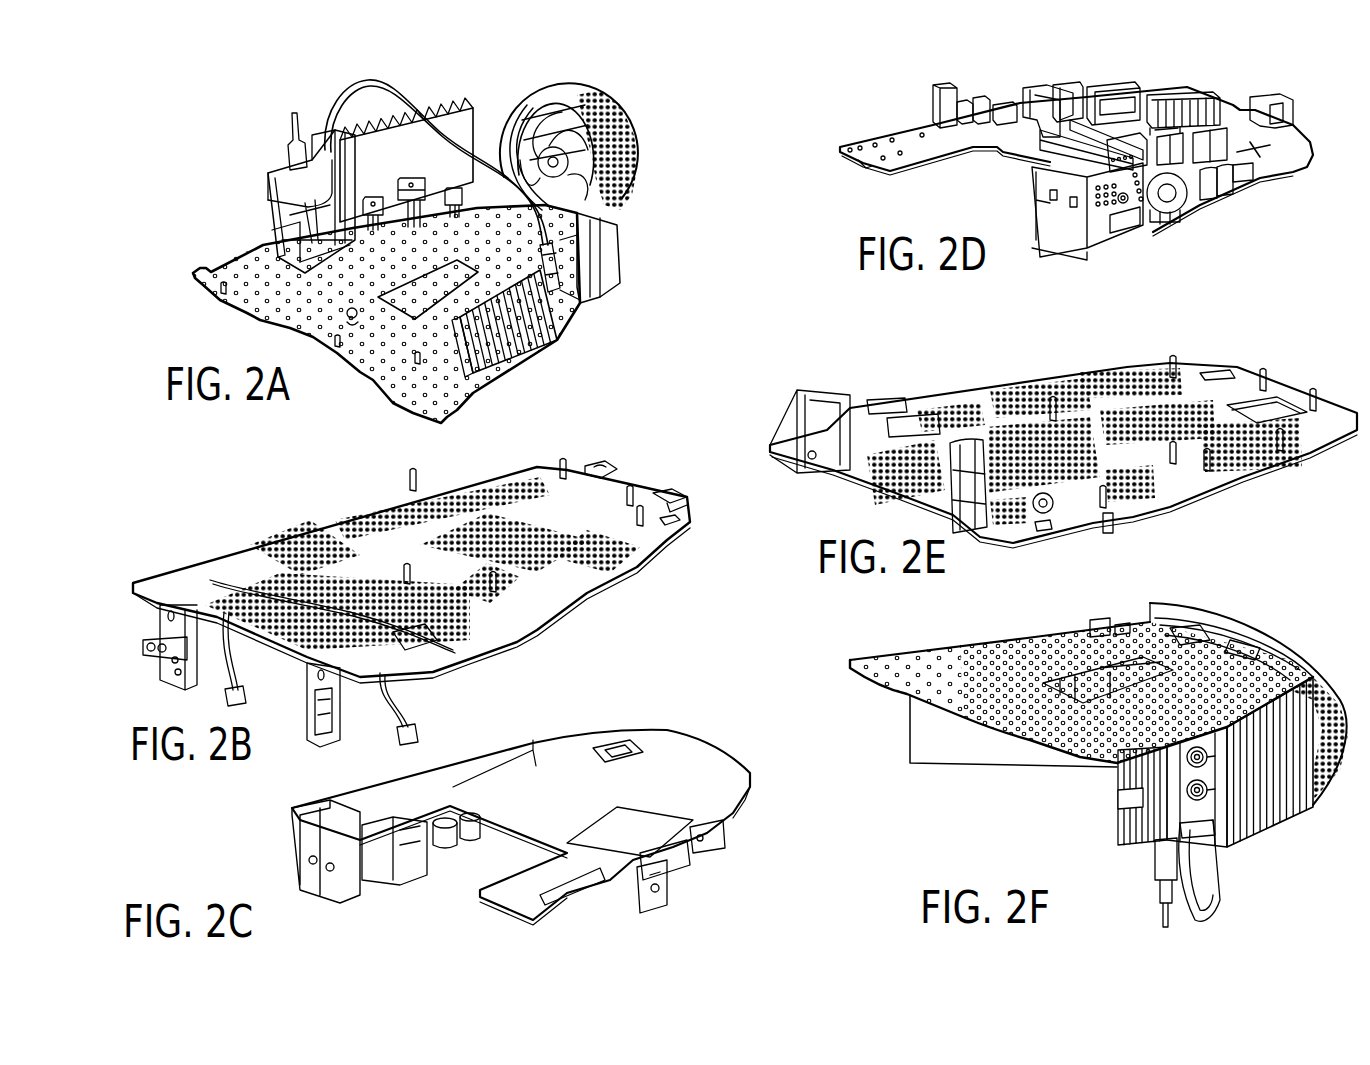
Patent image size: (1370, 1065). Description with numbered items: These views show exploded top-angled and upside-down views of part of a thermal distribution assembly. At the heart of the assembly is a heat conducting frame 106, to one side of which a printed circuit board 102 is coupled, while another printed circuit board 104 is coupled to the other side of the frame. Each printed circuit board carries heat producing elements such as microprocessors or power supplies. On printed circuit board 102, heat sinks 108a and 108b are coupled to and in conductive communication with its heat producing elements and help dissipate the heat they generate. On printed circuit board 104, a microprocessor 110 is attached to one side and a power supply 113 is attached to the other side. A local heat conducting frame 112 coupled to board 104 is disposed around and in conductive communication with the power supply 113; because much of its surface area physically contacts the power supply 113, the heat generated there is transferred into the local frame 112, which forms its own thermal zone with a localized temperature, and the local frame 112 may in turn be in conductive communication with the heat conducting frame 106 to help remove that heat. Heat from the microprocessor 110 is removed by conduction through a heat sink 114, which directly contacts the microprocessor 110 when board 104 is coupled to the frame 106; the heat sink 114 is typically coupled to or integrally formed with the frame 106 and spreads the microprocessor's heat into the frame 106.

In FIG. 2A, the printed circuit board 102 is at (625, 250).
In FIG. 2F, the printed circuit board 102 is at (1230, 620).
In FIG. 2C, the printed circuit board 104 is at (548, 810).
In FIG. 2D, the printed circuit board 104 is at (1105, 178).
In FIG. 2B, the heat conducting frame 106 is at (600, 470).
In FIG. 2E, the heat conducting frame 106 is at (1063, 445).
In FIG. 2A, the heat sink 108a is at (419, 103).
In FIG. 2F, the heat sink 108a is at (1277, 830).
In FIG. 2A, the heat sink 108b is at (530, 347).
In FIG. 2C, the microprocessor 110 is at (637, 747).
In FIG. 2C, the local heat conducting frame 112 is at (340, 893).
In FIG. 2D, the local heat conducting frame 112 is at (1107, 222).
In FIG. 2C, the power supply 113 is at (378, 877).
In FIG. 2E, the heat sink 114 is at (1280, 403).